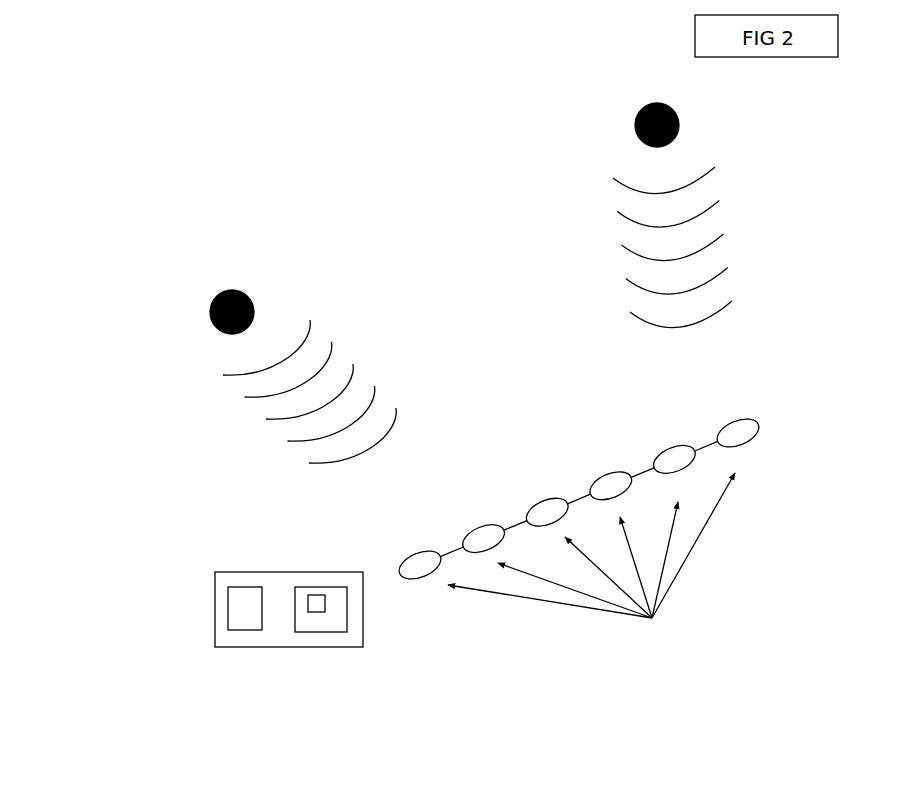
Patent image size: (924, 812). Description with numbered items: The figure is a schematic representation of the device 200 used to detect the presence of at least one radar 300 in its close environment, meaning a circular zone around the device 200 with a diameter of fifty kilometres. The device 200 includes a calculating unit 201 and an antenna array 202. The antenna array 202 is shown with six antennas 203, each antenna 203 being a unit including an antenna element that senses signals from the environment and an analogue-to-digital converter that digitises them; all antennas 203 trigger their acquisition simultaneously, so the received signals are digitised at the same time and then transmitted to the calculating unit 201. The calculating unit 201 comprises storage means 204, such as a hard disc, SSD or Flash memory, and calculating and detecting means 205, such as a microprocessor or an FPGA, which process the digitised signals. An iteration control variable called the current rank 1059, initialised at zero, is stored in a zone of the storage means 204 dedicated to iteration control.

The device 200 is at (223, 624).
The calculating unit 201 is at (275, 652).
The antenna array 202 is at (701, 446).
The antenna 203 is at (591, 568).
The storage means 204 is at (343, 630).
The calculating and detecting means 205 is at (243, 585).
The radar 300 is at (615, 105).
The current rank 1059 is at (315, 614).